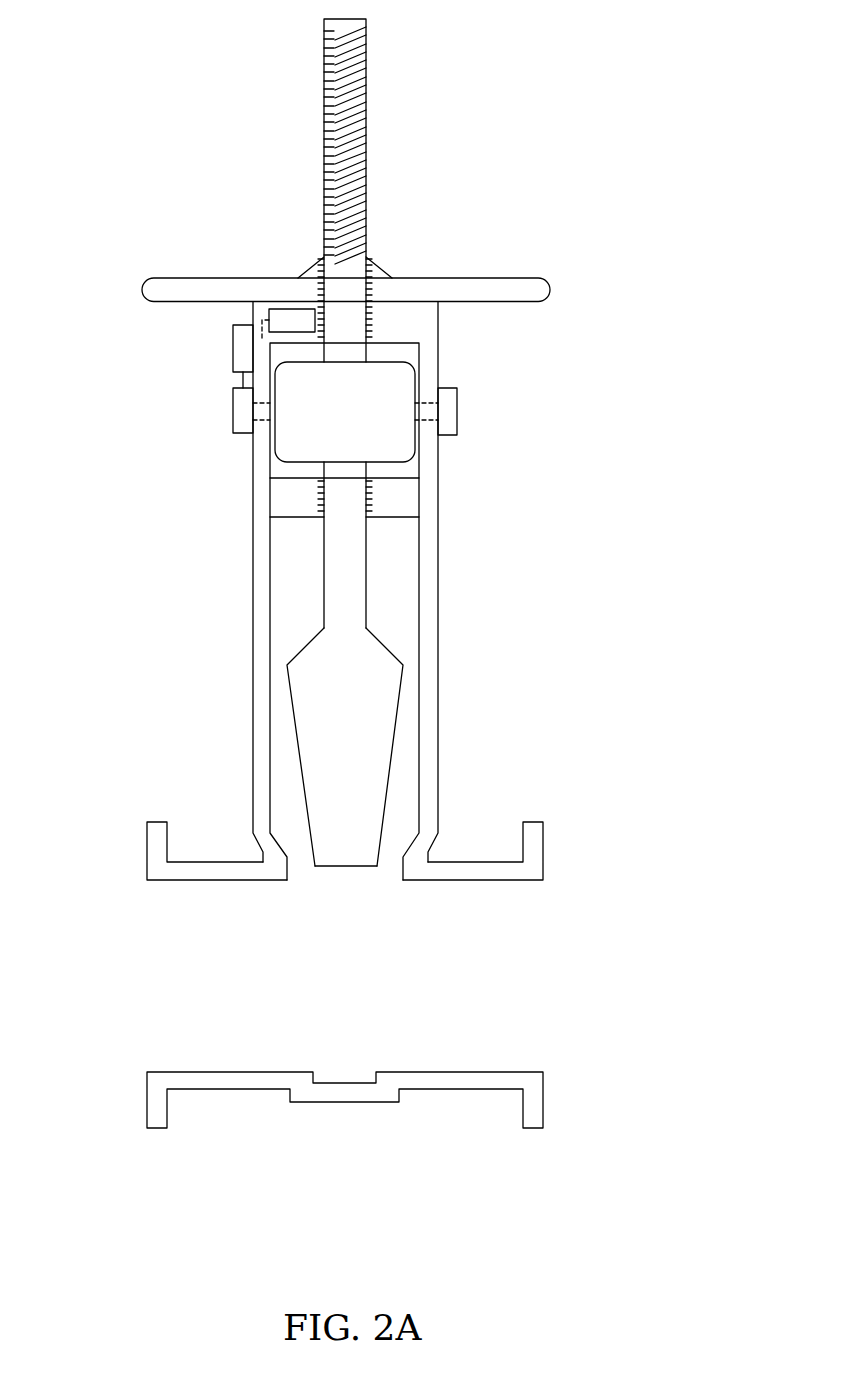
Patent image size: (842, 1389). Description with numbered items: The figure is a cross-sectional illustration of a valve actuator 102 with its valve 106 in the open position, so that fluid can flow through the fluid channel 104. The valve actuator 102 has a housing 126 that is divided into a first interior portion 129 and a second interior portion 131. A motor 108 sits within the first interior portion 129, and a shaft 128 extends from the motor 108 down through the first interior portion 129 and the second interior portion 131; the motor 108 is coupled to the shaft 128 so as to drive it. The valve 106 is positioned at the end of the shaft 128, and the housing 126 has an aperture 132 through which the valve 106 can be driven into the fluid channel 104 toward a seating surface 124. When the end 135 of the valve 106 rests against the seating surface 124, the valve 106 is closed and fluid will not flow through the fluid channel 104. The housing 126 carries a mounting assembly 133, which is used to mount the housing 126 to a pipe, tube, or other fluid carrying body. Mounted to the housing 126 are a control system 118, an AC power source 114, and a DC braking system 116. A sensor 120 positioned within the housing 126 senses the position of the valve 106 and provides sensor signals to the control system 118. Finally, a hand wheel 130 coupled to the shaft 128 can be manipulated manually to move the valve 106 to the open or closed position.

The valve actuator 102 is at (538, 117).
The fluid channel 104 is at (222, 987).
The valve 106 is at (398, 707).
The motor 108 is at (402, 361).
The AC power source 114 is at (231, 402).
The DC braking system 116 is at (459, 404).
The control system 118 is at (231, 340).
The sensor 120 is at (288, 316).
The seating surface 124 is at (347, 1083).
The housing 126 is at (253, 575).
The shaft 128 is at (368, 148).
The first interior portion 129 is at (390, 352).
The hand wheel 130 is at (205, 277).
The second interior portion 131 is at (318, 565).
The aperture 132 is at (392, 862).
The mounting assembly 133 is at (147, 862).
The end 135 is at (343, 867).